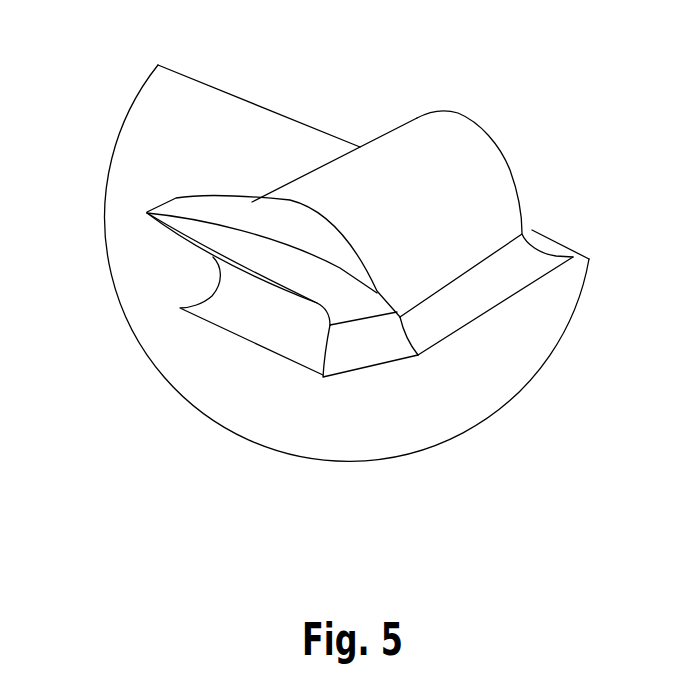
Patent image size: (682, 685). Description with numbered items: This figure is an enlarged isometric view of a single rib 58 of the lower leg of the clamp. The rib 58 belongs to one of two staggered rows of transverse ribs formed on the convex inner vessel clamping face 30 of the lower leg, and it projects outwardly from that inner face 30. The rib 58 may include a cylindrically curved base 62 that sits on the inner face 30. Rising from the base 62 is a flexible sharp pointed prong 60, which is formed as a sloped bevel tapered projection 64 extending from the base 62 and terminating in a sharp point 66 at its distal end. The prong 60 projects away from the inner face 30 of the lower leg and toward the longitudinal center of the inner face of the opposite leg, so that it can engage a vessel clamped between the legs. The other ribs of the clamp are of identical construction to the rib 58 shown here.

The inner vessel clamping face 30 is at (213, 113).
The rib 58 is at (418, 127).
The sharp pointed prong 60 is at (227, 157).
The cylindrically curved base 62 is at (440, 212).
The sloped bevel tapered projection 64 is at (272, 220).
The sharp point 66 is at (147, 213).